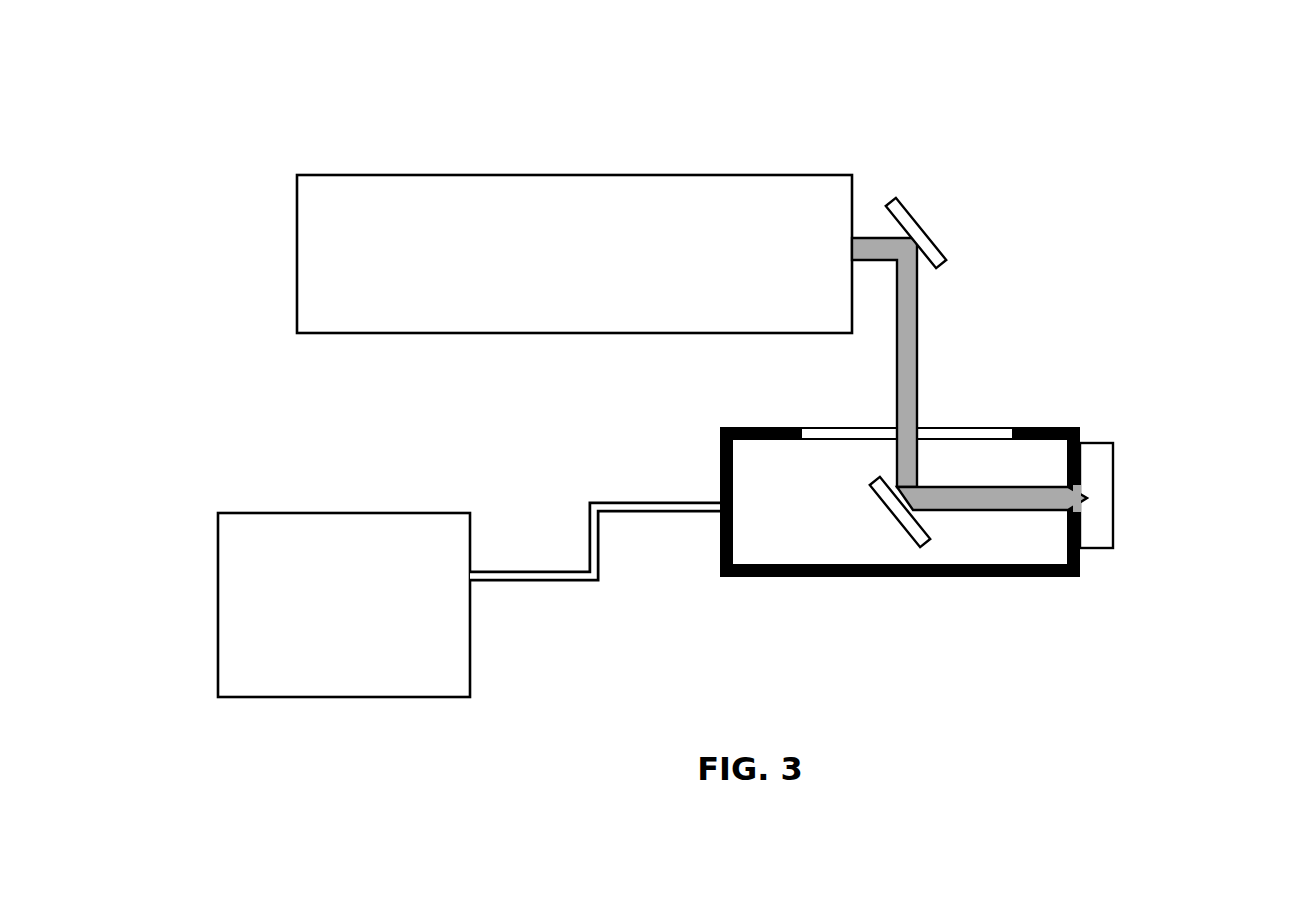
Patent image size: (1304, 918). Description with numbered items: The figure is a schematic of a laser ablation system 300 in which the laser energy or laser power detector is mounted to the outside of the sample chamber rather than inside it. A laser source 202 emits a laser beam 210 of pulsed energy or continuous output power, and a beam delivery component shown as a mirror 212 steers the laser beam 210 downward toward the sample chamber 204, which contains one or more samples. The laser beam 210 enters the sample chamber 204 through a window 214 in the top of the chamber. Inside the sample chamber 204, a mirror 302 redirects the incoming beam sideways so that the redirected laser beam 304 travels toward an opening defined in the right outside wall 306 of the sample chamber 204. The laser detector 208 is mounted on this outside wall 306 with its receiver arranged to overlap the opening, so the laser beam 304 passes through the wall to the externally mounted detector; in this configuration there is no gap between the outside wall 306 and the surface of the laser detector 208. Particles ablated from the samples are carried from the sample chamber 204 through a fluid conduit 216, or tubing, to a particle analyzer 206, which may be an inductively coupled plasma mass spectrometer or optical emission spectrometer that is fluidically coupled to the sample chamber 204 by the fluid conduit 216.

The laser ablation system 300 is at (818, 82).
The laser source 202 is at (574, 254).
The particle analyzer 206 is at (344, 605).
The fluid conduit 216 is at (630, 502).
The sample chamber 204 is at (1027, 578).
The window 214 is at (973, 417).
The laser detector 208 is at (1117, 481).
The laser beam 210 is at (919, 307).
The mirror 212 is at (915, 218).
The mirror inside the sample chamber 302 is at (890, 512).
The laser beam 304 is at (950, 510).
The outside wall 306 is at (1082, 563).